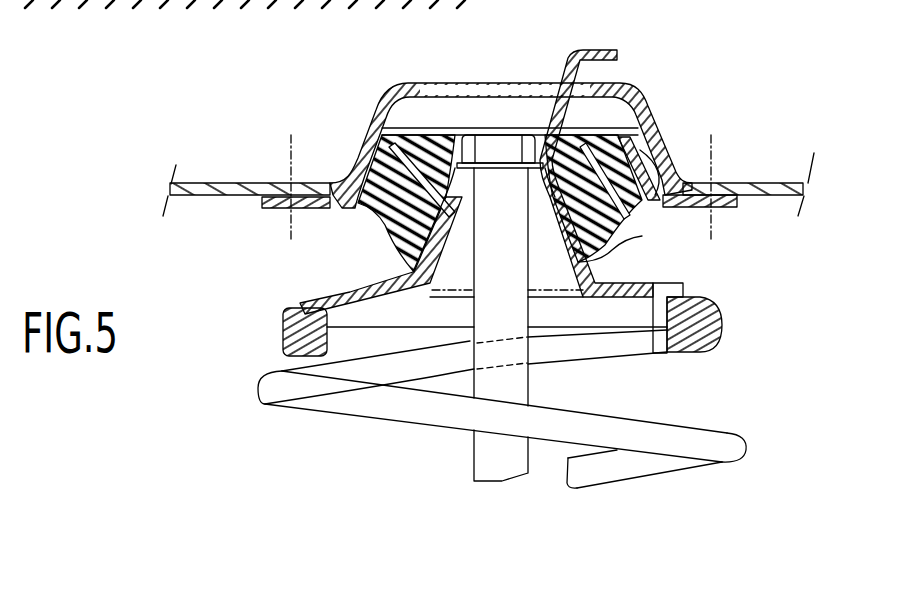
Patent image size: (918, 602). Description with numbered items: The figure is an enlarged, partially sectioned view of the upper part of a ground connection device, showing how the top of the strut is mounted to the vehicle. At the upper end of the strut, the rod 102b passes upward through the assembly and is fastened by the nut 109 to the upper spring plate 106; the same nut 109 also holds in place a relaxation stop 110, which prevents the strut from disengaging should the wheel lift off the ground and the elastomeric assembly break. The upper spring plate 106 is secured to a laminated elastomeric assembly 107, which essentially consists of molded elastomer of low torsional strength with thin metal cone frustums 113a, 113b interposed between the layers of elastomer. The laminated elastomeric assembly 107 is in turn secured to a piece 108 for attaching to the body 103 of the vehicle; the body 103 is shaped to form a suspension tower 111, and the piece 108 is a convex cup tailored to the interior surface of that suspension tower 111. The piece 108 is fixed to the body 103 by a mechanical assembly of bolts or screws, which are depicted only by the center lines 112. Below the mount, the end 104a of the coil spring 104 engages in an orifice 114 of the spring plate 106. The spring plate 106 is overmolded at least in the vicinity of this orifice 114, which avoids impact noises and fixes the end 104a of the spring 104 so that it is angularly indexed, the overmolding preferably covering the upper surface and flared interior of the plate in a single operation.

The rod 102b is at (497, 448).
The body 103 is at (223, 190).
The spring 104 is at (722, 435).
The end of the spring 104a is at (678, 283).
The upper spring plate 106 is at (285, 332).
The laminated elastomeric assembly 107 is at (368, 239).
The piece for attaching to the body 108 is at (695, 205).
The nut 109 is at (503, 147).
The relaxation stop 110 is at (603, 50).
The suspension tower 111 is at (353, 138).
The center lines 112 is at (291, 152).
The metal cone frustum 113a is at (630, 252).
The metal cone frustum 113b is at (665, 173).
The orifice 114 is at (667, 340).